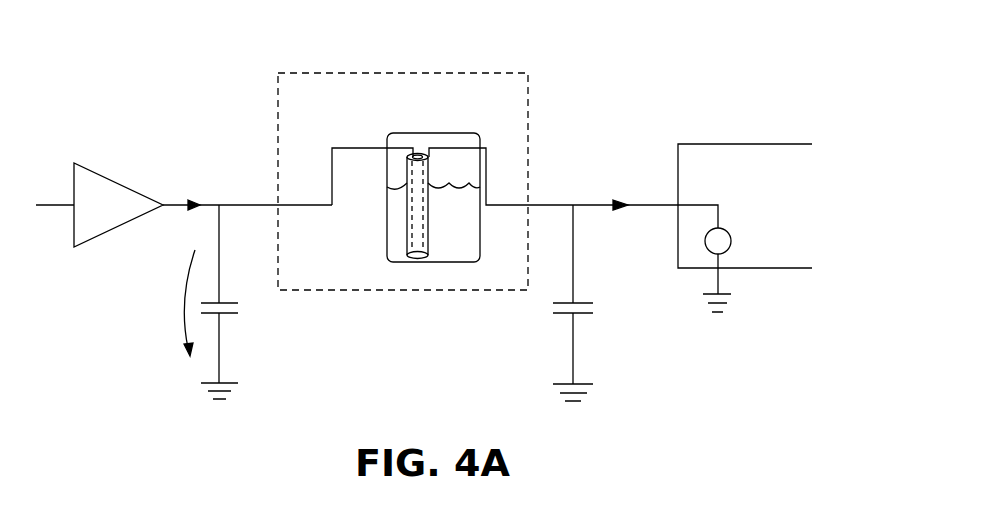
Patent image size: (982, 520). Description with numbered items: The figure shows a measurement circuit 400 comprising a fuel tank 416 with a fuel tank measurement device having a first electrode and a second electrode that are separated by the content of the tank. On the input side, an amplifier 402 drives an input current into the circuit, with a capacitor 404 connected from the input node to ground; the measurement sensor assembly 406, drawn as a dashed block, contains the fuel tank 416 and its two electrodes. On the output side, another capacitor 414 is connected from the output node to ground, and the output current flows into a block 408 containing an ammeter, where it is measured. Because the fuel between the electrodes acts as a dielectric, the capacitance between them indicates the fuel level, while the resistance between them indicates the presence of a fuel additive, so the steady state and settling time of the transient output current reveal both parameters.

The measurement circuit 400 is at (119, 50).
The amplifier 402 is at (110, 178).
The input capacitor 404 is at (238, 325).
The electrochemical cell assembly 406 is at (500, 73).
The current measurement load 408 is at (753, 144).
The output capacitor 414 is at (597, 327).
The fuel tank 416 is at (445, 133).